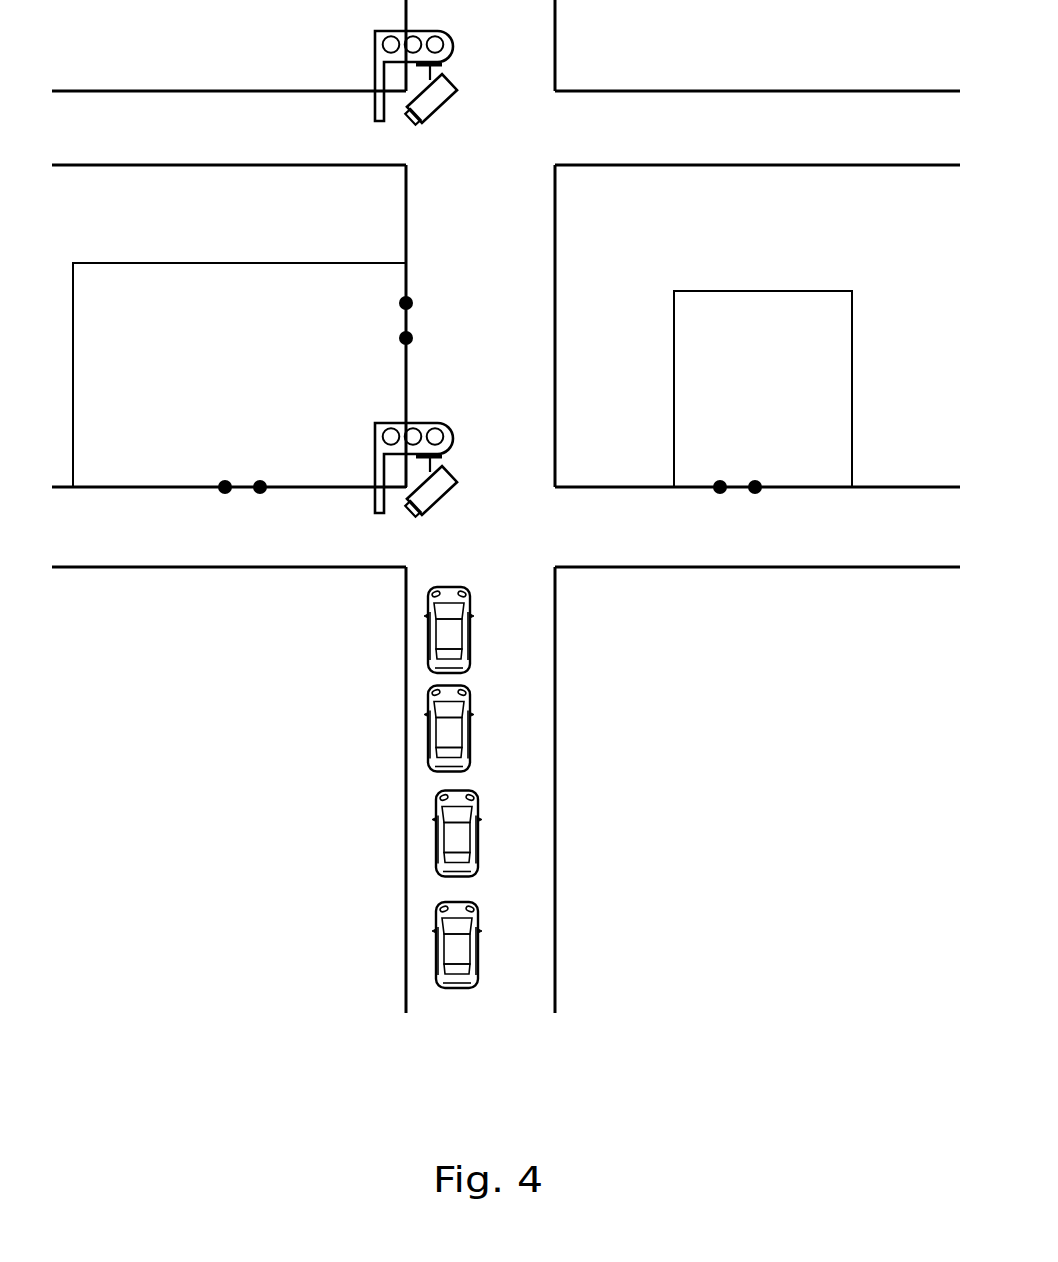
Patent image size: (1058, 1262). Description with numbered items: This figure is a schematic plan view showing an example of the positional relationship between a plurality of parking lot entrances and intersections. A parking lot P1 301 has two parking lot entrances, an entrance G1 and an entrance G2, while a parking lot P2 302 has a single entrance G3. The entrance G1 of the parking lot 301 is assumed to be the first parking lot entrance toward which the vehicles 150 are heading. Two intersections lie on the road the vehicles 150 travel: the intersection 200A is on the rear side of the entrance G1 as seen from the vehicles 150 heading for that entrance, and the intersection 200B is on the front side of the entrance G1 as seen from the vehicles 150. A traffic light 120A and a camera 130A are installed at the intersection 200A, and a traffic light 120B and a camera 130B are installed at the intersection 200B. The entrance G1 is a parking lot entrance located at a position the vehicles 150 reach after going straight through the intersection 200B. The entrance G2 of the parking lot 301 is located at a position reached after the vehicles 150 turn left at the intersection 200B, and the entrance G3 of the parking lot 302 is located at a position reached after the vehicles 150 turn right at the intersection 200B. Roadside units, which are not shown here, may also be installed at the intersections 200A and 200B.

The traffic light 120A is at (374, 63).
The camera 130A is at (456, 90).
The intersection 200A is at (553, 108).
The traffic light 120B is at (374, 453).
The camera 130B is at (456, 482).
The intersection 200B is at (547, 507).
The parking lot 301 is at (280, 262).
The parking lot 302 is at (778, 290).
The vehicles 150 is at (449, 586).
The entrance G1 is at (386, 320).
The entrance G2 is at (242, 467).
The entrance G3 is at (737, 466).
The parking lot P1 is at (239, 373).
The parking lot P2 is at (763, 388).